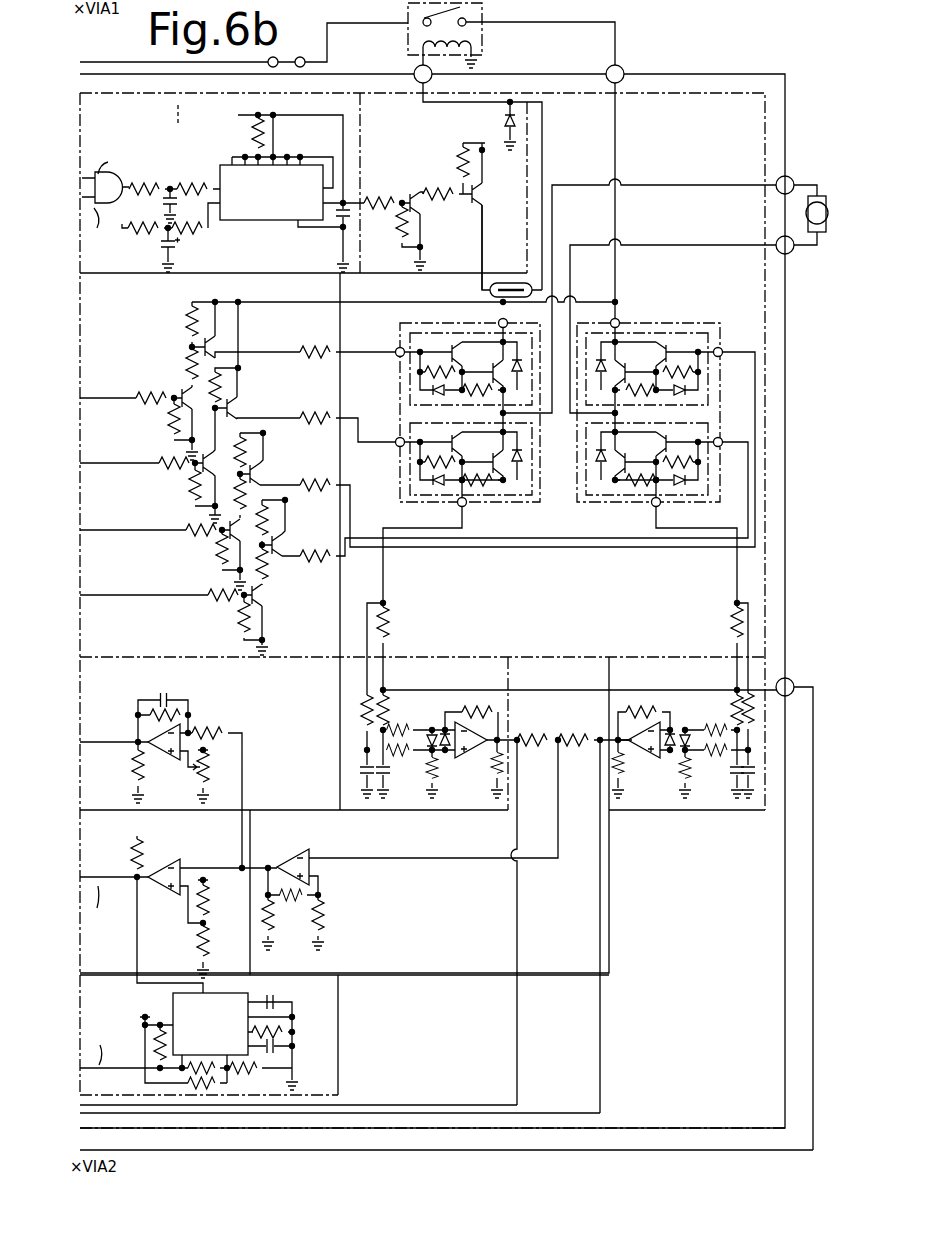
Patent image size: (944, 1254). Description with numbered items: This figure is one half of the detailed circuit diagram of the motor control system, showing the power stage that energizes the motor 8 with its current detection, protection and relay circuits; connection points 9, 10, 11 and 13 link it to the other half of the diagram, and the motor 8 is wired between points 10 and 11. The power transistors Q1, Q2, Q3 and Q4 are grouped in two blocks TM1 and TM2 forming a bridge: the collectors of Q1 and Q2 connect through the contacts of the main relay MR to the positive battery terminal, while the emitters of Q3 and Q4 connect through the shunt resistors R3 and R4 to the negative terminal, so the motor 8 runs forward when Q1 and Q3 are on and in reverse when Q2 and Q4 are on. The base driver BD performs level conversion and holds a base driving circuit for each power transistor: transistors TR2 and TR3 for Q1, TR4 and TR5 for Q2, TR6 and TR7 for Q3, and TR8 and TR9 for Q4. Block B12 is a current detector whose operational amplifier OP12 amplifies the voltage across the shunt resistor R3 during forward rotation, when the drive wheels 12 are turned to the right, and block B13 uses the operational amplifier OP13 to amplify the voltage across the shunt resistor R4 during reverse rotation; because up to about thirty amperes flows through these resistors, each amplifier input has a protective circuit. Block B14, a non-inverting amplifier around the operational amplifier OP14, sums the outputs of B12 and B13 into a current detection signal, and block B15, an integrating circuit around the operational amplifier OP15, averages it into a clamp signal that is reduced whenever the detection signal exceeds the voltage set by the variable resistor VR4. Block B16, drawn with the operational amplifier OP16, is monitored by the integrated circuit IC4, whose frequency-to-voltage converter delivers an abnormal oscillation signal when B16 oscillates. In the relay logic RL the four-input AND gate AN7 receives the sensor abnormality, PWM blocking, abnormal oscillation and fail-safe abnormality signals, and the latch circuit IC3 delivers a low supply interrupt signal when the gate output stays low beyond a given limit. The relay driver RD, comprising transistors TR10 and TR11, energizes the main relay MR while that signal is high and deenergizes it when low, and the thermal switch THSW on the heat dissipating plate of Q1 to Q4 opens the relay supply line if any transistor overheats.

The motor 8 is at (826, 244).
The terminal 9 is at (478, 177).
The terminal 10 is at (648, 294).
The terminal 11 is at (682, 324).
The drive wheels 12 is at (598, 914).
The terminal 13 is at (615, 191).
The main relay MR is at (485, 42).
The relay logic RL is at (112, 129).
The relay driver RD is at (395, 129).
The base driver BD is at (112, 304).
The four input AND gate AN7 is at (120, 177).
The latch circuit IC3 is at (277, 190).
The integrated circuit IC4 is at (189, 1041).
The transistor TR2 is at (193, 399).
The transistor TR3 is at (216, 340).
The transistor TR4 is at (215, 466).
The transistor TR5 is at (240, 399).
The transistor TR6 is at (240, 526).
The transistor TR7 is at (264, 467).
The transistor TR8 is at (265, 599).
The transistor TR9 is at (285, 535).
The transistor TR10 is at (434, 210).
The transistor TR11 is at (496, 194).
The thermal switch THSW is at (483, 253).
The transistor module TM1 is at (443, 455).
The transistor module TM2 is at (657, 429).
The power transistor Q1 is at (410, 385).
The power transistor Q2 is at (641, 332).
The power transistor Q3 is at (600, 497).
The power transistor Q4 is at (501, 502).
The shunt resistor R3 is at (724, 648).
The shunt resistor R4 is at (397, 646).
The current detector B12 is at (652, 682).
The current detector B13 is at (497, 682).
The non-inverting amplifier B14 is at (290, 836).
The integrating circuit B15 is at (117, 684).
The block B16 is at (117, 836).
The operational amplifier OP12 is at (645, 757).
The operational amplifier OP13 is at (473, 757).
The operational amplifier OP14 is at (303, 852).
The operational amplifier OP15 is at (162, 758).
The operational amplifier OP16 is at (175, 862).
The variable resistor VR4 is at (220, 770).